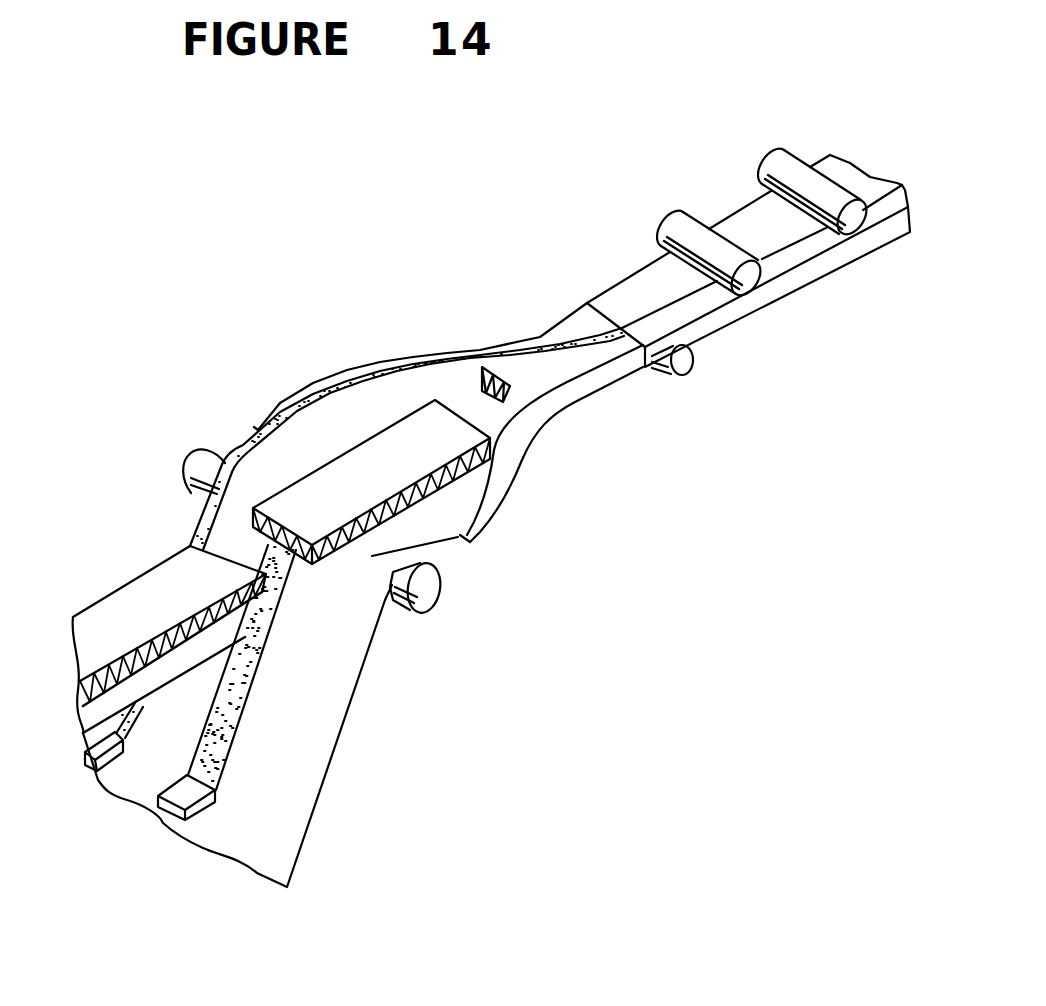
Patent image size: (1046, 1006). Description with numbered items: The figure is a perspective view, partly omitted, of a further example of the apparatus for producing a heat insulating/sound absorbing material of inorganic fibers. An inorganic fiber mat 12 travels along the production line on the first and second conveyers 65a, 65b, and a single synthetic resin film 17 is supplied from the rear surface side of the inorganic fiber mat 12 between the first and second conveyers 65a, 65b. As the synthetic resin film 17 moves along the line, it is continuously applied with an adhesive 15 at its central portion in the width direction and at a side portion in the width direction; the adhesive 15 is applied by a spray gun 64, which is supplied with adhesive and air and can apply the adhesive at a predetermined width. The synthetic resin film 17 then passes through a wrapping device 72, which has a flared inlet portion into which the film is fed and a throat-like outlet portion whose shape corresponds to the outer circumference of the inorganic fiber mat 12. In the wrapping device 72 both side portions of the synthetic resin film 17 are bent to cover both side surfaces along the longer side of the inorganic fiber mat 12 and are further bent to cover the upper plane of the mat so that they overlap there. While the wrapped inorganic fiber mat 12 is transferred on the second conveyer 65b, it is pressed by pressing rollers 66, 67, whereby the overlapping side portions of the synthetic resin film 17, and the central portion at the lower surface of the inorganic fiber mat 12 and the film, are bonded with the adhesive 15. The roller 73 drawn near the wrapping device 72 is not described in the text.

The inorganic fiber mat 12 is at (140, 603).
The adhesive 15 is at (247, 440).
The synthetic resin film 17 is at (293, 746).
The spray gun 64 is at (191, 801).
The first conveyer 65a is at (162, 668).
The second conveyer 65b is at (748, 317).
The pressing roller 66 is at (685, 232).
The pressing roller 67 is at (778, 172).
The wrapping device 72 is at (568, 416).
The roller 73 is at (414, 590).